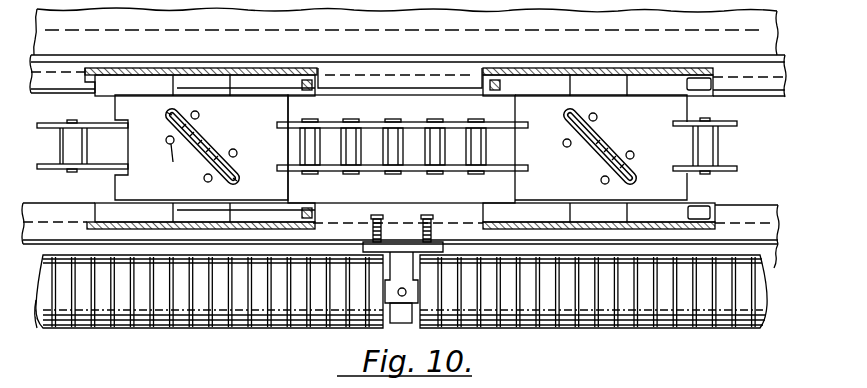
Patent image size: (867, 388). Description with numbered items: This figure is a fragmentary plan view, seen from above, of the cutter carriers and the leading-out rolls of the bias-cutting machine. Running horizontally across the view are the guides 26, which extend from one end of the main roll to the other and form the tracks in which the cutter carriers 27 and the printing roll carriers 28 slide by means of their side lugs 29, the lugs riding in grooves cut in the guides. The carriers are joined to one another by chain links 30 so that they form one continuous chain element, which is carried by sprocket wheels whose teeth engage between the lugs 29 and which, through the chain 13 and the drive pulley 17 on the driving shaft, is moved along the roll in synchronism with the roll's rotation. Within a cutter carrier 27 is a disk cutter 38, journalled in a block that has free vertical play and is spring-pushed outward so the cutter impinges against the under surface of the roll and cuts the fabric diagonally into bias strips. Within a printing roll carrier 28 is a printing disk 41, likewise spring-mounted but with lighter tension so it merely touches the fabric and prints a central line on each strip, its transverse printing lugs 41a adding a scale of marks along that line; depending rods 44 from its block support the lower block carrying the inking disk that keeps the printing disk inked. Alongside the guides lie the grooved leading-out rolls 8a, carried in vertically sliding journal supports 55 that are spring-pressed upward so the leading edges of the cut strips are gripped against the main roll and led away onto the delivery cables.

The smaller roll 8a is at (185, 322).
The chain 13 is at (188, 162).
The drive pulley 17 is at (383, 305).
The guides 26 is at (466, 80).
The cutter carriers 27 is at (601, 147).
The printing roll carriers 28 is at (201, 147).
The side lugs 29 is at (125, 85).
The chain links 30 is at (62, 122).
The disk cutter 38 is at (581, 150).
The printing disk 41 is at (201, 130).
The transverse printing lugs 41a is at (175, 121).
The depending rods 44 is at (199, 114).
The vertically sliding journal supports 55 is at (410, 308).